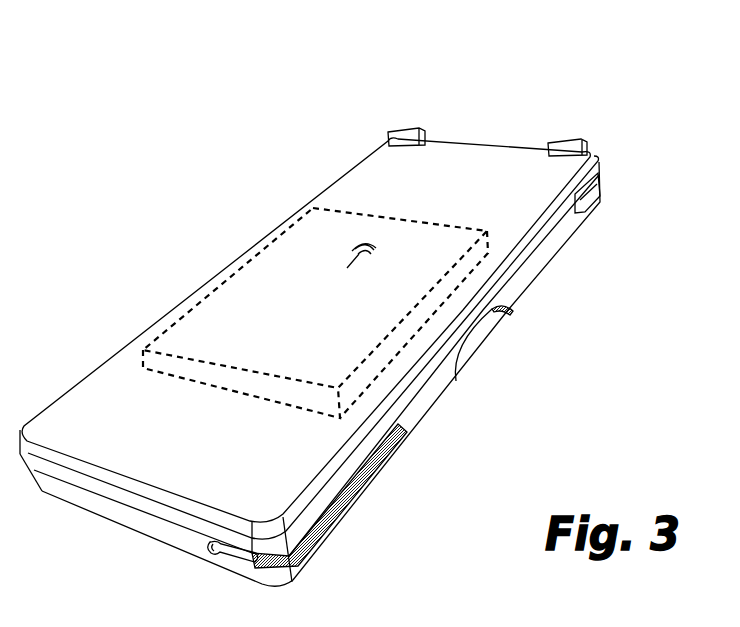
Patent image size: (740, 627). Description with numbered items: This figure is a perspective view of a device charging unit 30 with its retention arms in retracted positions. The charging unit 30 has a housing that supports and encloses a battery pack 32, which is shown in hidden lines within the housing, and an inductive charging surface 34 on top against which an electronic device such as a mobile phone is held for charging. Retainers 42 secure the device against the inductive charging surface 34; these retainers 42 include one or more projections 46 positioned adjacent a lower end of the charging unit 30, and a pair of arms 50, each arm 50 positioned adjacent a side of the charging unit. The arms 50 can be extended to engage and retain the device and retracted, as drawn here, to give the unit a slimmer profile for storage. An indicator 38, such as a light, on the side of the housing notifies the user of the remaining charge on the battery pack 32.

The device charging unit 30 is at (160, 155).
The battery pack 32 is at (262, 237).
The inductive charging surface 34 is at (130, 383).
The indicator 38 is at (345, 482).
The retainers 42 is at (470, 95).
The projections 46 is at (408, 131).
The arms 50 is at (185, 294).